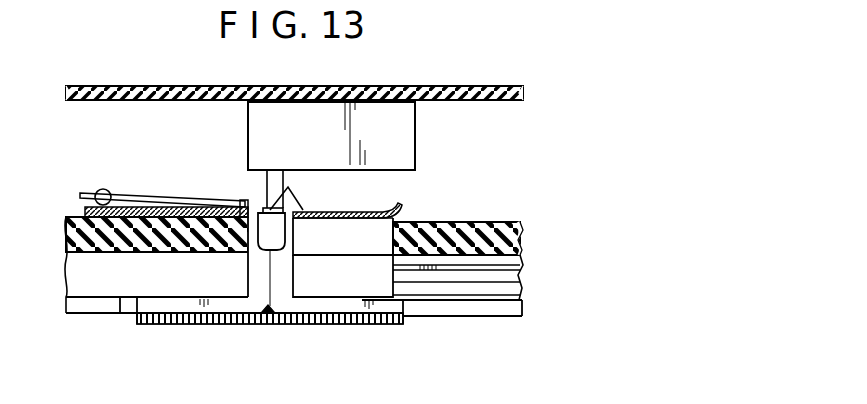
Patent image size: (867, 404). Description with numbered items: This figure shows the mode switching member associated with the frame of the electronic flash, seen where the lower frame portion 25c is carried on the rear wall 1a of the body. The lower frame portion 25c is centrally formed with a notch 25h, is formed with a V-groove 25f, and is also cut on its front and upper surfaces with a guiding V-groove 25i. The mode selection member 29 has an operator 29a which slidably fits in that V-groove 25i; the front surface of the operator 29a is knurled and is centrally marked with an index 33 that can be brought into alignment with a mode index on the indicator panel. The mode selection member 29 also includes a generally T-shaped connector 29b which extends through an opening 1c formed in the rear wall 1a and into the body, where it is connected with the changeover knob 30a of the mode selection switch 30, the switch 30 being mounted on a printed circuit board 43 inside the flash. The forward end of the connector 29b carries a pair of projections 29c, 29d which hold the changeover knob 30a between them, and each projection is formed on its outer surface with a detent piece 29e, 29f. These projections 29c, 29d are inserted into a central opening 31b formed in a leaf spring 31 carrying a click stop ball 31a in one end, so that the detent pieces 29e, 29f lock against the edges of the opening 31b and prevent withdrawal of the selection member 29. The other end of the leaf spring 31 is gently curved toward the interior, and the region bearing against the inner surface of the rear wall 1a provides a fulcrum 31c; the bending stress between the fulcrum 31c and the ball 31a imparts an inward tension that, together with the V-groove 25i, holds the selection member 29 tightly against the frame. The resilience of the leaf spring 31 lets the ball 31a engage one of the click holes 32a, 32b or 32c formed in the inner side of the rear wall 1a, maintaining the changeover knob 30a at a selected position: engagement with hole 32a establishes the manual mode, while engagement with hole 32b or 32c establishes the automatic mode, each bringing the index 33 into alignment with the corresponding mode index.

The printed circuit board 43 is at (479, 101).
The mode selection switch 30 is at (411, 154).
The changeover knob 30a is at (277, 178).
The click stop ball 31a is at (100, 190).
The leaf spring 31 is at (172, 199).
The click hole 32b is at (157, 206).
The detent piece 29e is at (239, 208).
The central opening 31b is at (290, 200).
The detent piece 29f is at (300, 208).
The opening 1c is at (383, 224).
The fulcrum 31c is at (392, 223).
The projection 29d is at (293, 232).
The rear wall 1a is at (510, 243).
The V-groove 25f is at (513, 278).
The click hole 32a is at (110, 252).
The click hole 32c is at (175, 252).
The projection 29c is at (249, 236).
The connector 29b is at (257, 281).
The lower frame portion 25c is at (76, 299).
The V-groove 25i is at (121, 313).
The mode selection member 29 is at (307, 305).
The operator 29a is at (180, 318).
The index 33 is at (268, 316).
The notch 25h is at (388, 278).